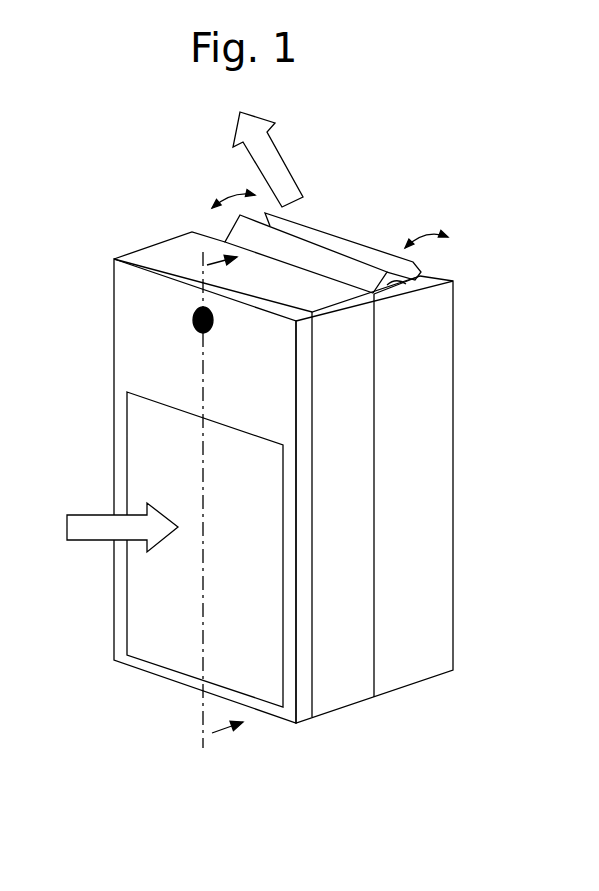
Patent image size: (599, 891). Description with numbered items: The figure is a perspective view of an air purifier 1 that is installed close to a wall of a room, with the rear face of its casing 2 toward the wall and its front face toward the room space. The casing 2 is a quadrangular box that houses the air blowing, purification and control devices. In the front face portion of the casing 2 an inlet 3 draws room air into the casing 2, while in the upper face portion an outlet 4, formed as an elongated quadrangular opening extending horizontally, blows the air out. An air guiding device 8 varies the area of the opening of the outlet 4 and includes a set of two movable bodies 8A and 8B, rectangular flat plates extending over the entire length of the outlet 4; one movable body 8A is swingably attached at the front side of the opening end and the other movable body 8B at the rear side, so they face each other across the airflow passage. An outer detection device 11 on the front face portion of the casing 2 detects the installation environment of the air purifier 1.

The air purifier 1 is at (147, 230).
The casing 2 is at (150, 352).
The inlet 3 is at (160, 607).
The outlet 4 is at (413, 283).
The air guiding device 8 is at (378, 237).
The movable body 8A is at (308, 248).
The movable body 8B is at (347, 237).
The outer detection device 11 is at (193, 317).